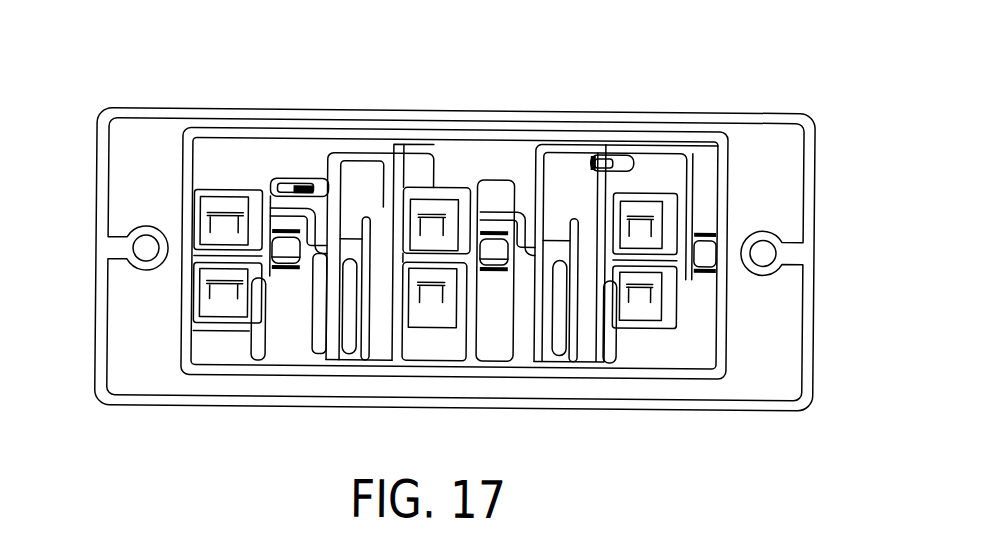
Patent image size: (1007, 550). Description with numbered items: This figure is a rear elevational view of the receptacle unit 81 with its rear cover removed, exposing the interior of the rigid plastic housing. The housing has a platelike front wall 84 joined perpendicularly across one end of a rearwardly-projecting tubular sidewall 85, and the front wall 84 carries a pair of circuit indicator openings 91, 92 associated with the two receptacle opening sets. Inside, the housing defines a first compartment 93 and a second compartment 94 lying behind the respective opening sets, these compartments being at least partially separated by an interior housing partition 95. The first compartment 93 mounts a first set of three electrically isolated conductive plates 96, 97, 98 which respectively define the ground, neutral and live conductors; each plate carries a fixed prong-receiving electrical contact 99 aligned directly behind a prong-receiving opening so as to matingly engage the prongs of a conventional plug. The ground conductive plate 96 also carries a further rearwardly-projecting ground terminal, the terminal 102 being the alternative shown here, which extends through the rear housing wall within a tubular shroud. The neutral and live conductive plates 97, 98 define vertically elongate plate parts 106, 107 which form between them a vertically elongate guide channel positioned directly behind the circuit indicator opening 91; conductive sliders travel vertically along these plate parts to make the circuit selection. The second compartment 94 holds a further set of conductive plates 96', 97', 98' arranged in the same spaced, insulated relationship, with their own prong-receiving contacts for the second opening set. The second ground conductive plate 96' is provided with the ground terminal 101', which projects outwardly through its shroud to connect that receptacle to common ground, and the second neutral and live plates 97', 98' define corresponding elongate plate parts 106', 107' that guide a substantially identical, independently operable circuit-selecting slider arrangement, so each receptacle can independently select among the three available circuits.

The receptacle unit 81 is at (128, 88).
The front wall 84 is at (783, 323).
The tubular sidewall 85 is at (681, 133).
The circuit indicator opening 91 is at (357, 256).
The circuit indicator opening 92 is at (564, 253).
The first compartment 93 is at (702, 167).
The second compartment 94 is at (212, 150).
The interior housing partition 95 is at (405, 175).
The ground conductive plate 96 is at (307, 206).
The ground conductive plate 96' is at (524, 151).
The neutral conductive plate 97 is at (278, 167).
The neutral conductive plate 97' is at (497, 202).
The live conductive plate 98 is at (238, 362).
The live conductive plate 98' is at (604, 370).
The prong-receiving electrical contact 99 is at (212, 223).
The prong-receiving terminal 101' is at (627, 108).
The prong-receiving terminal 102 is at (293, 178).
The vertically elongate plate part 106 is at (369, 189).
The vertically elongate plate part 106' is at (615, 184).
The vertically elongate plate part 107 is at (379, 299).
The vertically elongate plate part 107' is at (623, 301).